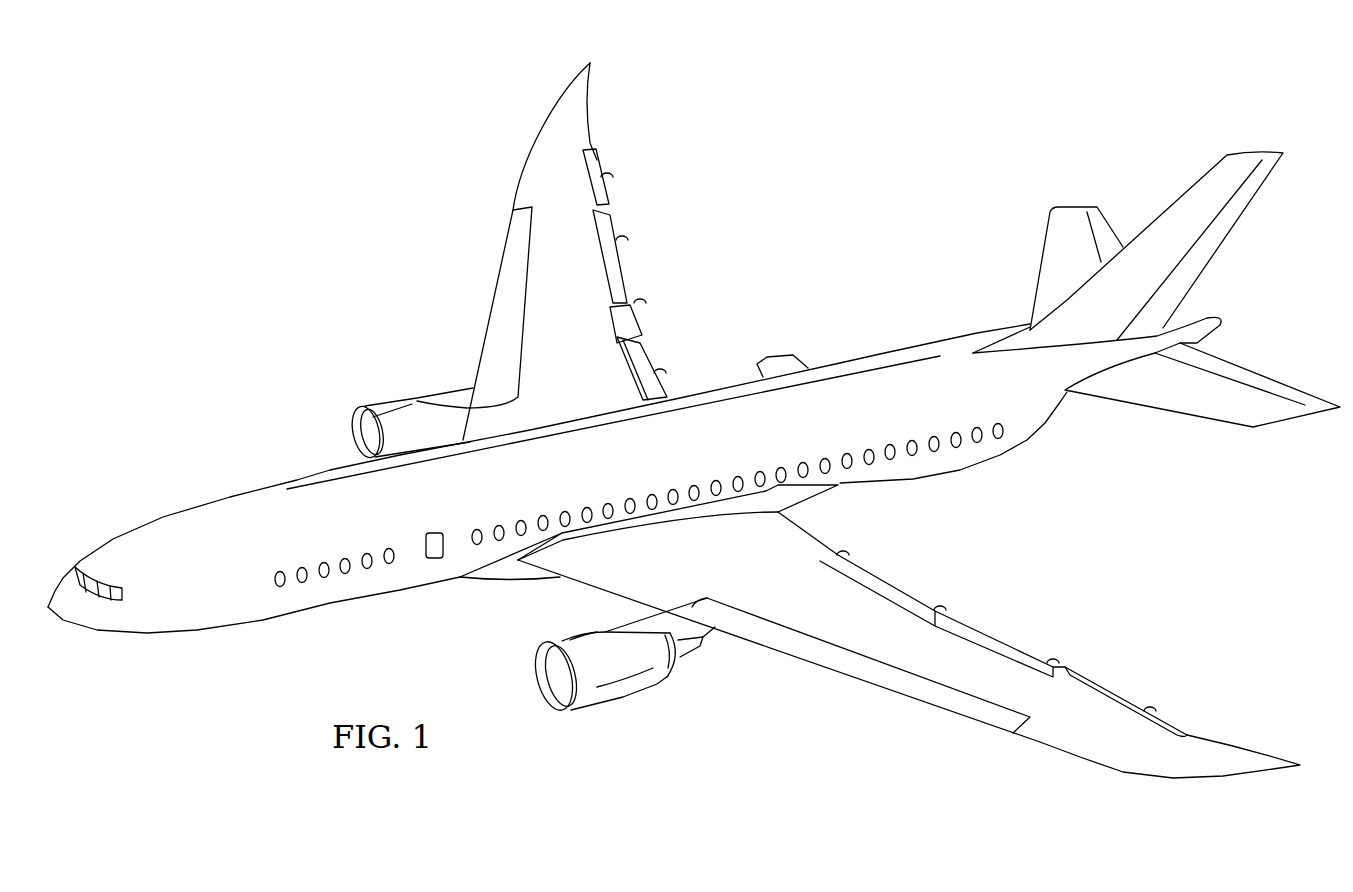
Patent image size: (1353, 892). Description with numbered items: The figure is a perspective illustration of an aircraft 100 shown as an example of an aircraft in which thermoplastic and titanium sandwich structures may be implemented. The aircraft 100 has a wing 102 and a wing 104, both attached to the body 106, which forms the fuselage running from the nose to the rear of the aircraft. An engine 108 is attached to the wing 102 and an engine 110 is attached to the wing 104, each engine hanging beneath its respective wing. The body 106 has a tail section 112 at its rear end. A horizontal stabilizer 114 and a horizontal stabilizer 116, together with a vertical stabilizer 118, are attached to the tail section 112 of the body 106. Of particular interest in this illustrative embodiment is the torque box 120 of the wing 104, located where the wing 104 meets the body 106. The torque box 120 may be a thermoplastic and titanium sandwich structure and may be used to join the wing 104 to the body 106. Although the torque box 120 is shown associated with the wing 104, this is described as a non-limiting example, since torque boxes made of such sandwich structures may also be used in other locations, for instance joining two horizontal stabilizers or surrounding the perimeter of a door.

The aircraft 100 is at (338, 300).
The wing 102 is at (589, 98).
The wing 104 is at (1150, 777).
The body 106 is at (222, 494).
The engine 108 is at (393, 398).
The engine 110 is at (622, 702).
The tail section 112 is at (1106, 460).
The horizontal stabilizer 114 is at (1040, 265).
The horizontal stabilizer 116 is at (1205, 411).
The vertical stabilizer 118 is at (1232, 238).
The torque box 120 is at (565, 583).